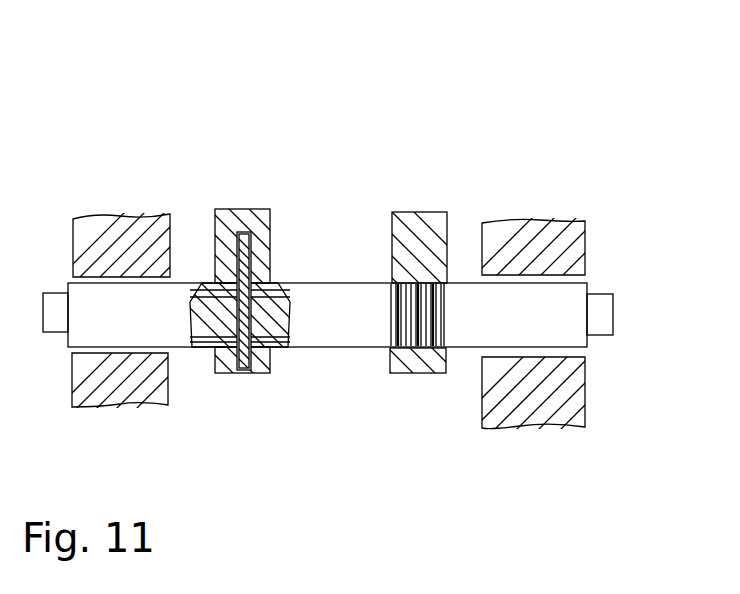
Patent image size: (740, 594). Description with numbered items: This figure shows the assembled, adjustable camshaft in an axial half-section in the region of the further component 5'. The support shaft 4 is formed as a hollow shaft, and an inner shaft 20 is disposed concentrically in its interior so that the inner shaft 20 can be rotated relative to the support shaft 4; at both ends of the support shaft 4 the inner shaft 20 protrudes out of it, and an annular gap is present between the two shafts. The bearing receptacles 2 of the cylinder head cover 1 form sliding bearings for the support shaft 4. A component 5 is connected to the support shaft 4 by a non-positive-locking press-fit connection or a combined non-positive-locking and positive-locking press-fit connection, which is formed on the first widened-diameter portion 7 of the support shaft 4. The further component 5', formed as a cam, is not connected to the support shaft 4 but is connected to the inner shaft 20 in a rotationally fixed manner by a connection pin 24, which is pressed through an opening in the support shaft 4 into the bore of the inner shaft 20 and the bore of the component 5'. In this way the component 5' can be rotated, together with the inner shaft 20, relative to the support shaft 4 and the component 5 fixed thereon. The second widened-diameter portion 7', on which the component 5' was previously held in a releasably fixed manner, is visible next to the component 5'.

The cylinder head cover 1 is at (573, 265).
The bearing receptacle 2 is at (175, 270).
The support shaft 4 is at (362, 305).
The component 5 is at (403, 282).
The further component 5' is at (235, 210).
The first widened-diameter portion 7 is at (442, 409).
The second widened-diameter portion 7' is at (269, 209).
The inner shaft 20 is at (281, 313).
The connection pin 24 is at (264, 340).